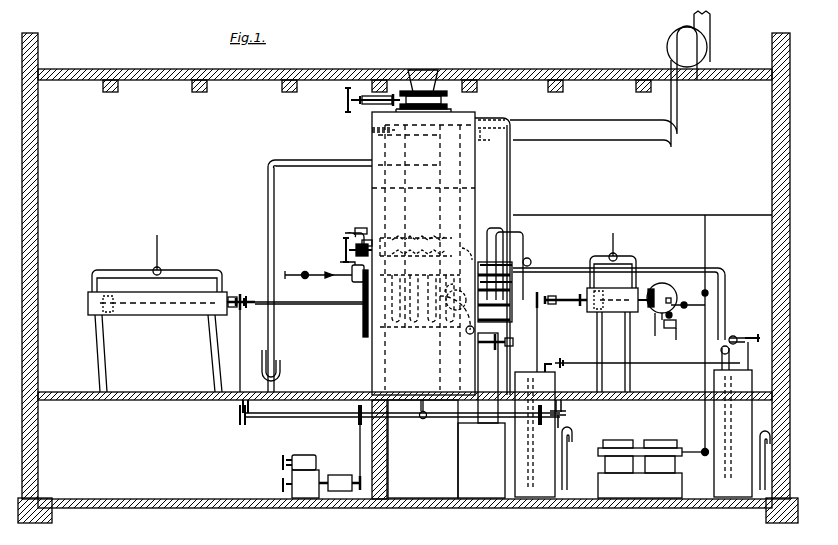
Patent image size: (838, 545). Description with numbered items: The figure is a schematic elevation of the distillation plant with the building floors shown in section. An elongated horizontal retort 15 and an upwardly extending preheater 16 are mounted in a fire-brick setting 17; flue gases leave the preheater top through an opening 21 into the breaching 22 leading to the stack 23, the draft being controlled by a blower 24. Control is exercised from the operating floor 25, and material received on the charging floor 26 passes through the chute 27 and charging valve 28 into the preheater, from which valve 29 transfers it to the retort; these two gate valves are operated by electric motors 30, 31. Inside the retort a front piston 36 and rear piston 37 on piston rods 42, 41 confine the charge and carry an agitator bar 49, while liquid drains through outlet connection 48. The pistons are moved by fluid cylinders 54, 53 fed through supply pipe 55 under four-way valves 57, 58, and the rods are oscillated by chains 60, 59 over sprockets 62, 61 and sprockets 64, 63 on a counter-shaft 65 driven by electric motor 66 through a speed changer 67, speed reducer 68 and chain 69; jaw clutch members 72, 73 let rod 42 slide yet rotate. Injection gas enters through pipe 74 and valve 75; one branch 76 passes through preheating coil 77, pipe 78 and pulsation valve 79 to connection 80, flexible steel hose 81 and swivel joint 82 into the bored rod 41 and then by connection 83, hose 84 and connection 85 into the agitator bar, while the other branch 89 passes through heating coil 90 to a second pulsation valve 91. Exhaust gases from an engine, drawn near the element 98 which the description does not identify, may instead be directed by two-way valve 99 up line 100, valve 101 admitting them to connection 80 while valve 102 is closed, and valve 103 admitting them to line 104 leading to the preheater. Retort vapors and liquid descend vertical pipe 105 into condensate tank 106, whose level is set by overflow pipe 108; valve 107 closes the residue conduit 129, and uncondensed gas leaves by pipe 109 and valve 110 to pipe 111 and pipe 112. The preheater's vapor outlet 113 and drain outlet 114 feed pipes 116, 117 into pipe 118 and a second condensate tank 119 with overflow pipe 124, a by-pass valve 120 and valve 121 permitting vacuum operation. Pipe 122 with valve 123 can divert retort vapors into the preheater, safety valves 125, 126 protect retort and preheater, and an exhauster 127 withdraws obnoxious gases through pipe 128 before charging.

The retort 15 is at (362, 318).
The preheater 16 is at (372, 188).
The setting 17 is at (372, 150).
The opening 21 is at (476, 150).
The breaching 22 is at (576, 135).
The stack 23 is at (708, 22).
The blower 24 is at (667, 44).
The operating floor 25 is at (126, 400).
The charging floor 26 is at (152, 82).
The chute 27 is at (440, 70).
The charging valve 28 is at (447, 100).
The valve 29 is at (426, 240).
The electric motor 30 is at (348, 93).
The electric motor 31 is at (346, 240).
The front or discharge piston 36 is at (372, 330).
The rear piston 37 is at (470, 335).
The piston rod 41 is at (501, 292).
The piston rod 42 is at (326, 305).
The outlet connection 48 is at (513, 342).
The agitator bar 49 is at (436, 328).
The fluid operated cylinder 53 is at (620, 288).
The fluid operated cylinder 54 is at (190, 292).
The supply pipe 55 is at (615, 250).
The four-way valve 57 is at (157, 236).
The four-way valve 58 is at (152, 268).
The chain 59 is at (538, 322).
The chain 60 is at (234, 348).
The sprocket 61 is at (550, 296).
The sprocket 62 is at (244, 292).
The sprocket 63 is at (568, 417).
The sprocket 64 is at (240, 424).
The counter-shaft 65 is at (404, 416).
The electric motor 66 is at (300, 455).
The speed changing device 67 is at (304, 480).
The speed reducer 68 is at (340, 475).
The chain 69 is at (360, 437).
The jaw clutch member 72 is at (248, 306).
The jaw clutch member 73 is at (247, 296).
The pipe 74 is at (287, 274).
The valve 75 is at (306, 279).
The branch 76 is at (354, 282).
The preheating coil 77 is at (410, 330).
The pipe 78 is at (656, 331).
The pulsation valve 79 is at (686, 341).
The connection 80 is at (674, 300).
The flexible steel hose 81 is at (665, 283).
The swivel joint 82 is at (648, 289).
The connection 83 is at (448, 277).
The flexible steel hose 84 is at (462, 290).
The connection 85 is at (457, 315).
The branch 89 is at (336, 257).
The heating coil 90 is at (420, 301).
The pulsation valve 91 is at (350, 230).
The battery 98 is at (668, 446).
The two-way valve 99 is at (705, 456).
The line 100 is at (700, 372).
The valve 101 is at (684, 326).
The valve 102 is at (667, 316).
The valve 103 is at (708, 290).
The line 104 is at (684, 215).
The vertical pipe 105 is at (527, 360).
The condensate tank 106 is at (520, 440).
The valve 107 is at (493, 378).
The overflow pipe 108 is at (574, 442).
The pipe 109 is at (613, 352).
The valve 110 is at (553, 358).
The pipe 111 is at (750, 353).
The pipe 112 is at (761, 328).
The vapor outlet 113 is at (445, 128).
The drain outlet 114 is at (422, 175).
The pipe 116 is at (510, 185).
The pipe 117 is at (490, 228).
The pipe 118 is at (555, 268).
The second condensate tank 119 is at (752, 386).
The valve 120 is at (736, 336).
The valve 121 is at (720, 343).
The pipe 122 is at (525, 232).
The valve 123 is at (530, 258).
The overflow pipe 124 is at (755, 436).
The safety valve 125 is at (470, 249).
The safety valve 126 is at (372, 128).
The exhauster 127 is at (263, 363).
The pipe 128 is at (268, 165).
The conduit 129 is at (478, 384).